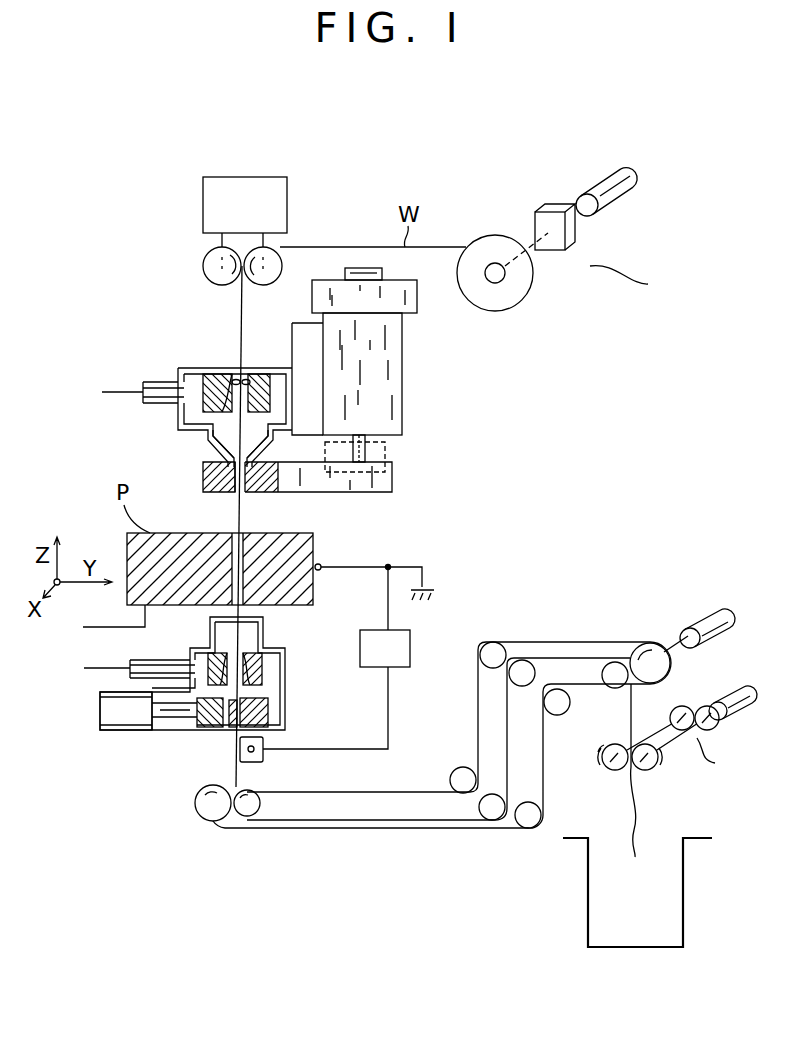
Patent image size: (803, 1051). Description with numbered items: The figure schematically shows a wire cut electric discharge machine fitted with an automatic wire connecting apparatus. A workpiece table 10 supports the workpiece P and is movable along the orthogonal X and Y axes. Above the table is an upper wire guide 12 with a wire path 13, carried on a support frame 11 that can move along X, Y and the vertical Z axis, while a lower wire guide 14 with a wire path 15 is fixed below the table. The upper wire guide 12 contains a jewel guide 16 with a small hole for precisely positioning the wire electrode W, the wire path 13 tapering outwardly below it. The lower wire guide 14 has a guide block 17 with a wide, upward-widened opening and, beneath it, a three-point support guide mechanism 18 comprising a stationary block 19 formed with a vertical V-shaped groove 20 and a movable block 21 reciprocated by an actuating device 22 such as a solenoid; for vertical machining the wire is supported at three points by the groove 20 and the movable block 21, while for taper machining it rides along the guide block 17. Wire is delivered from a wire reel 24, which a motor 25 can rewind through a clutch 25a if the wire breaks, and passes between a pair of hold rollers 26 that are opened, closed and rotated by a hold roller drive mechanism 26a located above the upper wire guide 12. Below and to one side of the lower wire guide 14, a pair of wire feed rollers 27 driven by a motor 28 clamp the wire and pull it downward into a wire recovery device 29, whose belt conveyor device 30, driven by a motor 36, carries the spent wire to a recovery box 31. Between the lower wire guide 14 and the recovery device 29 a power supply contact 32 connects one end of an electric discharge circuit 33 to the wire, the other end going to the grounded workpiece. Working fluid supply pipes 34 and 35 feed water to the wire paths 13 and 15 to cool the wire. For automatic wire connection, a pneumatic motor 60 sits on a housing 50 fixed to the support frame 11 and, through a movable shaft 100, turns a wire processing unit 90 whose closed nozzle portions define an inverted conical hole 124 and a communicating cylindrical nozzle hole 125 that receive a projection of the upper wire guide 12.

The workpiece table 10 is at (127, 546).
The support frame 11 is at (302, 326).
The upper wire guide 12 is at (190, 368).
The wire path 13 is at (227, 415).
The lower wire guide 14 is at (288, 672).
The wire path 15 is at (246, 660).
The jewel guide 16 is at (226, 372).
The guide block 17 is at (212, 655).
The three-point support guide mechanism 18 is at (268, 710).
The stationary block 19 is at (266, 720).
The V-shaped groove 20 is at (232, 728).
The movable block 21 is at (200, 730).
The actuating device 22 is at (118, 732).
The wire reel 24 is at (532, 280).
The motor 25 is at (630, 197).
The clutch 25a is at (577, 241).
The hold rollers 26 is at (256, 248).
The hold roller drive mechanism 26a is at (222, 177).
The wire feed rollers 27 is at (610, 745).
The motor 28 is at (730, 697).
The wire recovery device 29 is at (413, 836).
The belt conveyor device 30 is at (271, 828).
The recovery box 31 is at (684, 897).
The power supply contact 32 is at (258, 762).
The electric discharge circuit 33 is at (411, 645).
The working fluid supply pipe 34 is at (160, 382).
The working fluid supply pipe 35 is at (150, 660).
The motor 36 is at (707, 621).
The housing 50 is at (396, 383).
The pneumatic motor 60 is at (412, 302).
The wire processing unit 90 is at (386, 444).
The movable shaft 100 is at (368, 455).
The inverted conical hole 124 is at (205, 483).
The cylindrical nozzle hole 125 is at (238, 492).